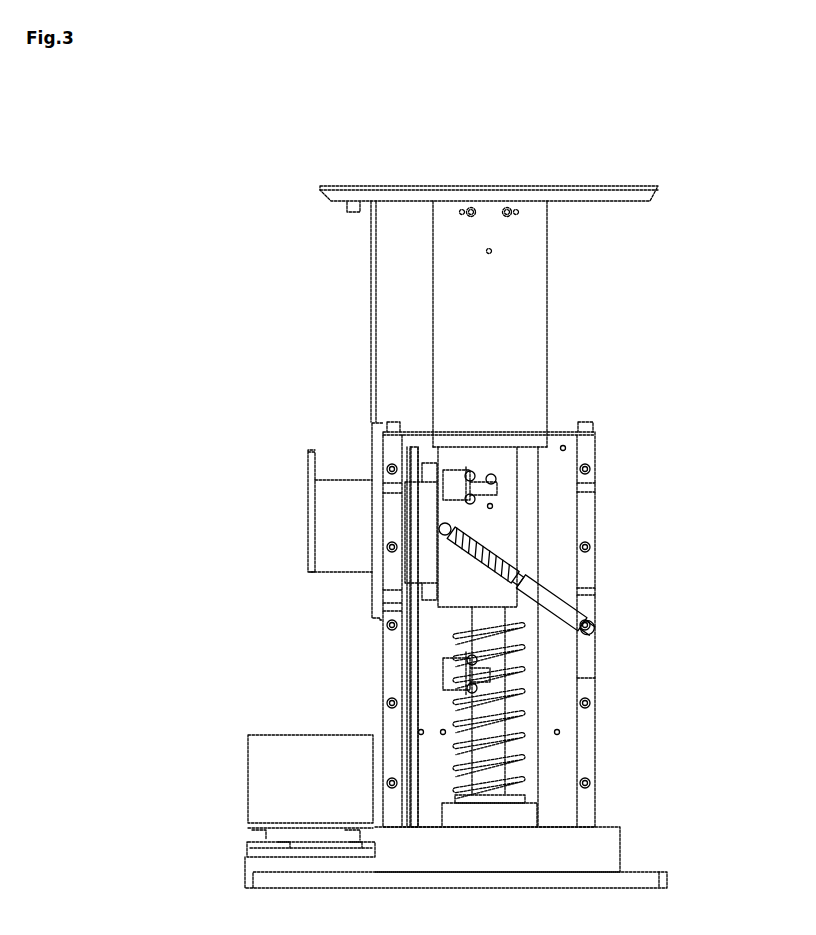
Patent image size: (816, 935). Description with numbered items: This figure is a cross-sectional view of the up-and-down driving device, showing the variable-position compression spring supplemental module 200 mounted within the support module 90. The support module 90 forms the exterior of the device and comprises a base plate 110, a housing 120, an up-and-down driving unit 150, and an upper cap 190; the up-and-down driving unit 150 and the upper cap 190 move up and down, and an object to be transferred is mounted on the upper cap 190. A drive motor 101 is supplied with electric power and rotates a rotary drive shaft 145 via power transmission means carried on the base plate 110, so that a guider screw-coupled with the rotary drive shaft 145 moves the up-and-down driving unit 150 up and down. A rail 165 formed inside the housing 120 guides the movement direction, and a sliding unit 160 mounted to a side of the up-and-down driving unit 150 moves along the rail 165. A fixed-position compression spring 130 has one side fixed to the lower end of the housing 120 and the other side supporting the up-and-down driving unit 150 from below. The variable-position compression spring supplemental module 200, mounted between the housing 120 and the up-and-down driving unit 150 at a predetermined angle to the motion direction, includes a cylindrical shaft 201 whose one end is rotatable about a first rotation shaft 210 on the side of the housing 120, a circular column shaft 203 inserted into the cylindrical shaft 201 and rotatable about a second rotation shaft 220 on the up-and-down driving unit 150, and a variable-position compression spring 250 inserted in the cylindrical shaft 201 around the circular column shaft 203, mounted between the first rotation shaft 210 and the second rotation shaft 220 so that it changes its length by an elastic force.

The support module 90 is at (696, 152).
The upper cap 190 is at (668, 195).
The up-and-down driving unit 150 is at (527, 360).
The variable-position compression spring supplemental module 200 is at (552, 538).
The sliding unit 160 is at (418, 500).
The second rotation shaft 220 is at (440, 528).
The circular column shaft 203 is at (478, 538).
The variable-position compression spring 250 is at (503, 560).
The cylindrical shaft 201 is at (563, 601).
The first rotation shaft 210 is at (596, 632).
The rail 165 is at (412, 615).
The rotary drive shaft 145 is at (453, 712).
The fixed-position compression spring 130 is at (517, 676).
The housing 120 is at (563, 757).
The drive motor 101 is at (308, 800).
The base plate 110 is at (604, 846).